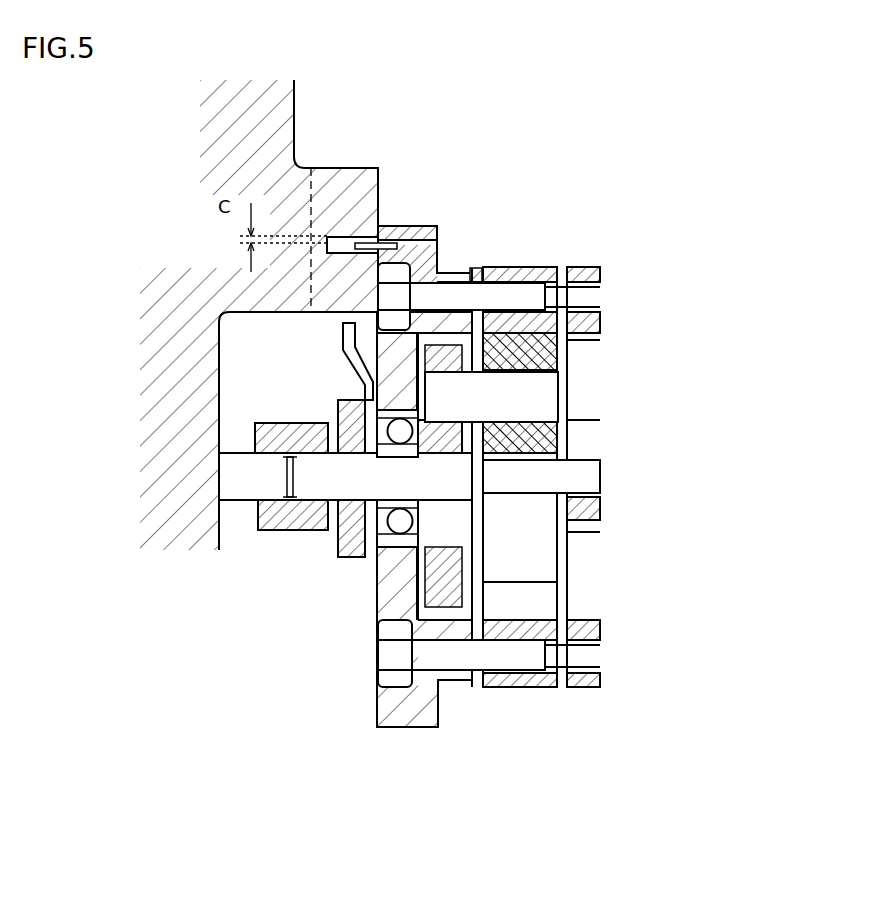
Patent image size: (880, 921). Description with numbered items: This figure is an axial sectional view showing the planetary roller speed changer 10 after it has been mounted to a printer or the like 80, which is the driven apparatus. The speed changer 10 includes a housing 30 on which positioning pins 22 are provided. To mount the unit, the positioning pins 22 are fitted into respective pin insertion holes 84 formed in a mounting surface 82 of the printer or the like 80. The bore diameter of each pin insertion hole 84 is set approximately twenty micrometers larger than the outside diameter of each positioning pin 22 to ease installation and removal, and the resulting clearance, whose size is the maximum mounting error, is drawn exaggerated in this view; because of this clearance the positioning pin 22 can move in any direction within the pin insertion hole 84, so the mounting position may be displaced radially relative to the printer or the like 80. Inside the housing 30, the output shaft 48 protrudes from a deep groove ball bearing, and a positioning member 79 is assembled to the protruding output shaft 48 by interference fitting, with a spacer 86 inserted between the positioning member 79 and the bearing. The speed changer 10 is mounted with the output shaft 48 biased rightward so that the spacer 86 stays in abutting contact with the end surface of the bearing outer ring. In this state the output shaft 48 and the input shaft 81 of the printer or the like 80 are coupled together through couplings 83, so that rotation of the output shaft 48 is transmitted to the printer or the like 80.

The planetary roller speed changer 10 is at (593, 205).
The positioning pin 22 is at (382, 228).
The housing 30 is at (440, 707).
The output shaft 48 is at (318, 492).
The positioning member 79 is at (338, 402).
The printer or the like 80 is at (153, 553).
The input shaft 81 is at (248, 492).
The mounting surface 82 is at (382, 183).
The coupling 83 is at (287, 530).
The pin insertion hole 84 is at (338, 237).
The spacer 86 is at (343, 325).